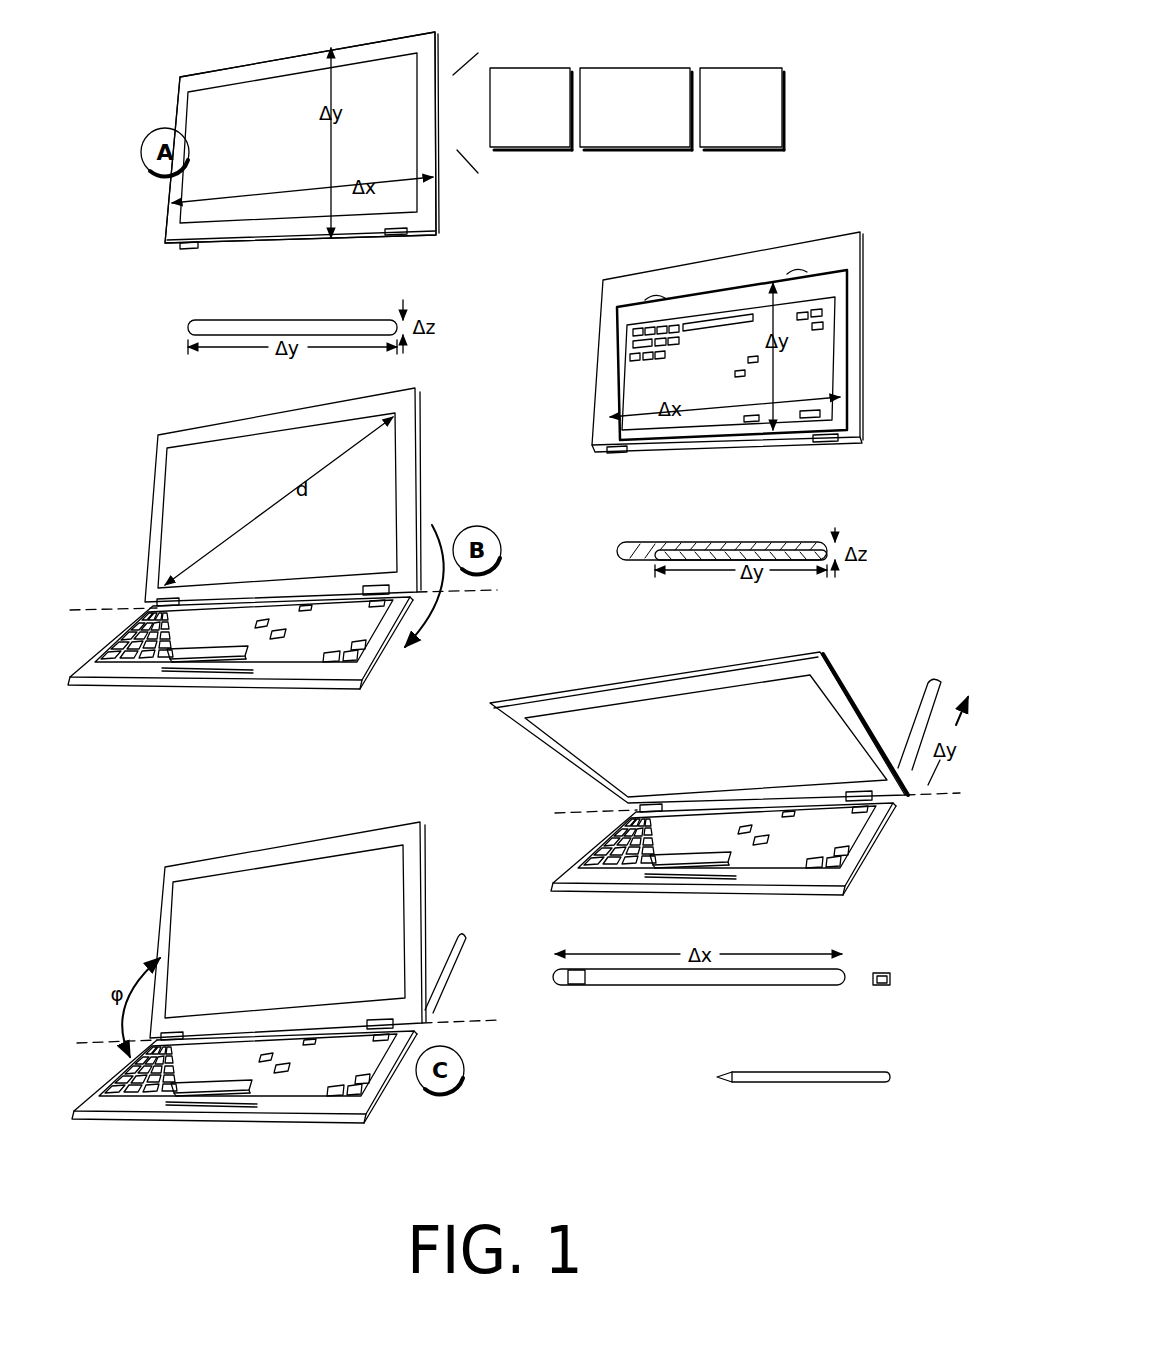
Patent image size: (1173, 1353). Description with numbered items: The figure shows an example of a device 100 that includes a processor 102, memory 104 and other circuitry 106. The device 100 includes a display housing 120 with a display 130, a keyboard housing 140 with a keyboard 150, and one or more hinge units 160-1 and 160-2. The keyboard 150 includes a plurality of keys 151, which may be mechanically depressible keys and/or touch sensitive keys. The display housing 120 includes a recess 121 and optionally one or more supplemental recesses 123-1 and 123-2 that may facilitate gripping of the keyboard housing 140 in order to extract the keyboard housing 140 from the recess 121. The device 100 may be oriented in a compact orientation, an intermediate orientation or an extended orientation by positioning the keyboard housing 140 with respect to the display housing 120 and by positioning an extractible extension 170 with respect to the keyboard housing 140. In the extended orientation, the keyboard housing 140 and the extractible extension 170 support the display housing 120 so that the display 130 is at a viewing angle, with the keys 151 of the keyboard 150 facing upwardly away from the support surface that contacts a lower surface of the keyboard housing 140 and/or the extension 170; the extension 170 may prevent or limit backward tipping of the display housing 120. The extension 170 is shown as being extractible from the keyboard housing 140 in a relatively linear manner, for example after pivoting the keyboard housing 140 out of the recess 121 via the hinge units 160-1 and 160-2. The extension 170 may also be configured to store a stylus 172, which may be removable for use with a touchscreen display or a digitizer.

The device 100 is at (218, 57).
The processor 102 is at (512, 132).
The memory 104 is at (617, 132).
The other circuitry 106 is at (723, 132).
The display housing 120 is at (430, 218).
The recess 121 is at (847, 288).
The supplemental recess 123-1 is at (797, 273).
The supplemental recess 123-2 is at (655, 300).
The display 130 is at (240, 167).
The keyboard housing 140 is at (617, 402).
The keyboard 150 is at (681, 382).
The keys 151 is at (822, 325).
The hinge unit 160-1 is at (188, 250).
The hinge unit 160-2 is at (397, 237).
The extractible extension 170 is at (457, 932).
The stylus 172 is at (883, 985).